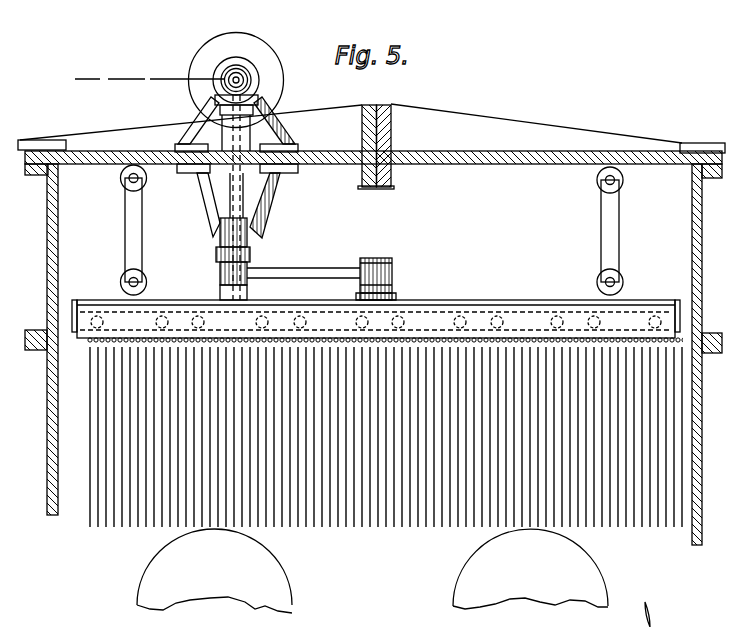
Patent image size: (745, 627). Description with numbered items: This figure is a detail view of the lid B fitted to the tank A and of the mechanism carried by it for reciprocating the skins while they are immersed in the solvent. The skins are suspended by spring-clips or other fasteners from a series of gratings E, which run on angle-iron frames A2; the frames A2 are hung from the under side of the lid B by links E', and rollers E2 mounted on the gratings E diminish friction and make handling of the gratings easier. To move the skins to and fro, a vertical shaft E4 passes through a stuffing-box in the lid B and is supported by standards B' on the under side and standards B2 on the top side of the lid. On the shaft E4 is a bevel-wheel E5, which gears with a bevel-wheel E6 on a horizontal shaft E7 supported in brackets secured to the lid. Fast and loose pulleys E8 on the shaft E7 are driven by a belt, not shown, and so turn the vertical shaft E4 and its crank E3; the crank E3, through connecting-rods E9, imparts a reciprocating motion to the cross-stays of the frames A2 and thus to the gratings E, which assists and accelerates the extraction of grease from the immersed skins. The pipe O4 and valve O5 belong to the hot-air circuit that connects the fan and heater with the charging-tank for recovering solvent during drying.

The tank A is at (373, 354).
The frame A2 is at (412, 300).
The lid B is at (371, 148).
The standards B' is at (237, 201).
The standards B2 is at (278, 134).
The gratings E is at (386, 432).
The links E' is at (366, 230).
The rollers E2 is at (667, 352).
The crank E3 is at (250, 258).
The vertical shaft E4 is at (233, 197).
The bevel-wheel E5 is at (253, 100).
The bevel-wheel E6 is at (253, 68).
The horizontal shaft E7 is at (224, 68).
The fast and loose pulleys E8 is at (236, 73).
The connecting-rods E9 is at (321, 274).
The pipe O4 is at (214, 571).
The valve O5 is at (530, 569).